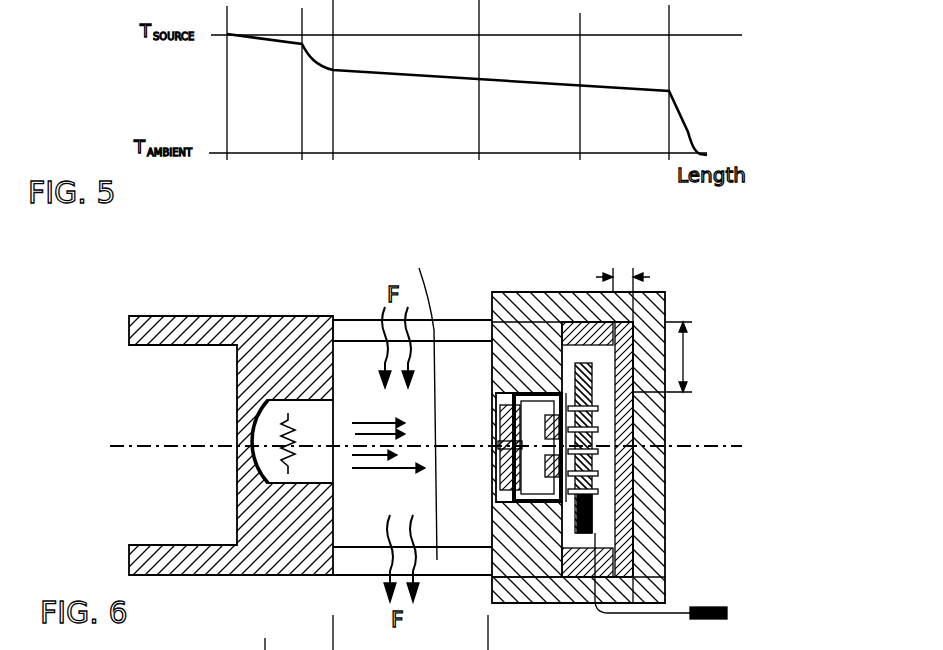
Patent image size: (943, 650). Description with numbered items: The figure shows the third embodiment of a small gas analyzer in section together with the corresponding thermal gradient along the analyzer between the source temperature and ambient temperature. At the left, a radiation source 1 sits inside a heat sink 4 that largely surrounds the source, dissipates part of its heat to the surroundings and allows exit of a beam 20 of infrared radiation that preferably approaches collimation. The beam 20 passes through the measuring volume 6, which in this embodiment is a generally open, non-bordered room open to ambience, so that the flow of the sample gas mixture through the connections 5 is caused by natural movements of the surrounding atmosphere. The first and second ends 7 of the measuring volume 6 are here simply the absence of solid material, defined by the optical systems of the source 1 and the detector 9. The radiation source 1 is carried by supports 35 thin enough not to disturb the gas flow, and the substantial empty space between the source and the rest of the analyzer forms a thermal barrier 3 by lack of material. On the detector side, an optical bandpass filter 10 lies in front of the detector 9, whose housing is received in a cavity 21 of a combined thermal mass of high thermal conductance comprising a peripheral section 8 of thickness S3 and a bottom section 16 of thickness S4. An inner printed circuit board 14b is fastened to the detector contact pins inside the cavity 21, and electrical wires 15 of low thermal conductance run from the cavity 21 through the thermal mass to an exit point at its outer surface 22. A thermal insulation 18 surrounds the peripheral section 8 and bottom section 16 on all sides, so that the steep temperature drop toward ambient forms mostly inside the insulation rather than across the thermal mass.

The radiation source 1 is at (267, 400).
The thermal barrier 3 is at (361, 311).
The heat sink 4 is at (172, 333).
The connections 5 is at (370, 559).
The measuring volume 6 is at (445, 375).
The first and second ends 7 is at (331, 472).
The peripheral section 8 is at (517, 343).
The detector 9 is at (542, 395).
The optical bandpass filter 10 is at (492, 427).
The inner printed circuit board 14b is at (580, 365).
The electrical wires 15 is at (672, 612).
The bottom section 16 is at (638, 505).
The thermal insulation 18 is at (652, 535).
The beam 20 is at (385, 452).
The cavity 21 is at (605, 487).
The outer surface 22 is at (537, 584).
The supports 35 is at (420, 330).
The material thickness of peripheral section S3 is at (675, 357).
The material thickness of bottom section S4 is at (636, 275).